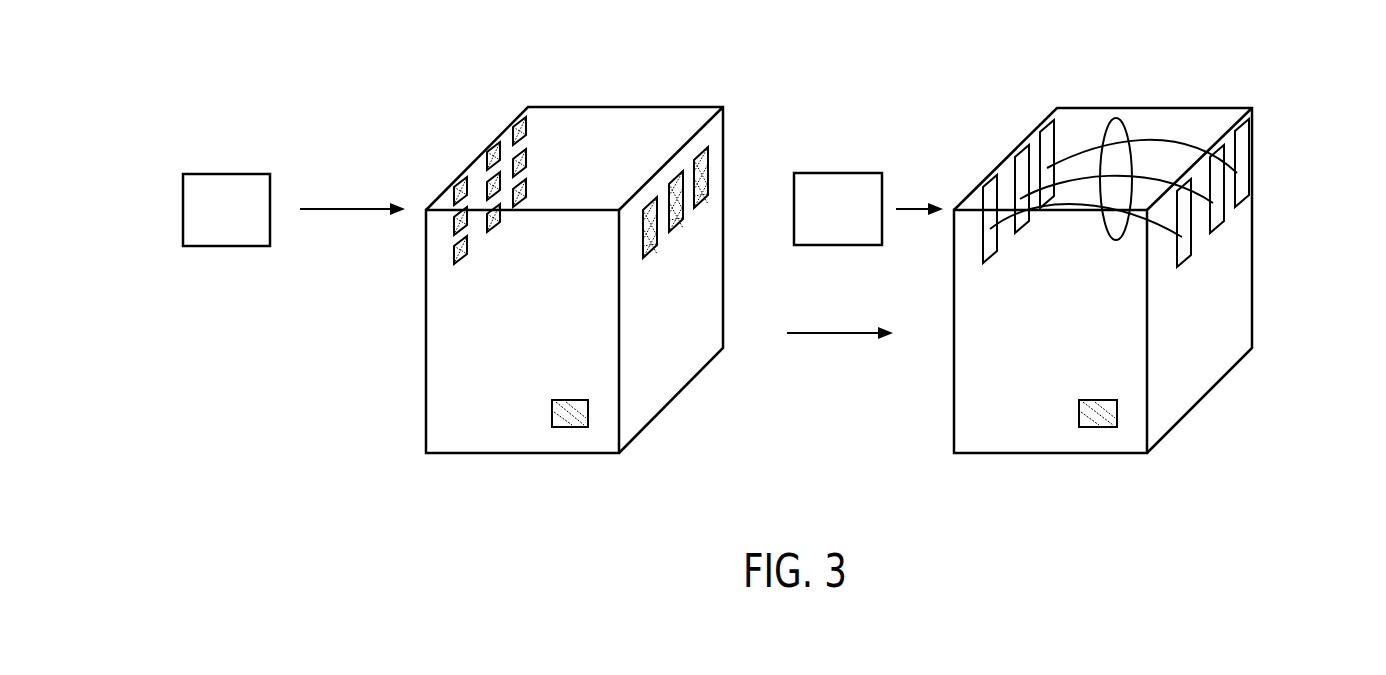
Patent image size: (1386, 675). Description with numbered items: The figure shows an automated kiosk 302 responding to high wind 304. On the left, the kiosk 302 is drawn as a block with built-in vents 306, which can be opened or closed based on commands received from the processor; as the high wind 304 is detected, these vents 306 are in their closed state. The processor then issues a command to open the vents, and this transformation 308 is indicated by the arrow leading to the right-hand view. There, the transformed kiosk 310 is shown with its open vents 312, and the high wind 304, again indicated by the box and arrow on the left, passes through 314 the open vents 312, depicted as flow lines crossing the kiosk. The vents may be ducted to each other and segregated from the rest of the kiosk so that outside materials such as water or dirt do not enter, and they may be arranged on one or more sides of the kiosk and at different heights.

The automated kiosk 302 is at (425, 447).
The high wind 304 is at (271, 186).
The vents 306 is at (524, 196).
The transformation 308 is at (828, 337).
The transformed kiosk 310 is at (1254, 330).
The open vents 312 is at (985, 260).
The pass through 314 is at (1115, 118).